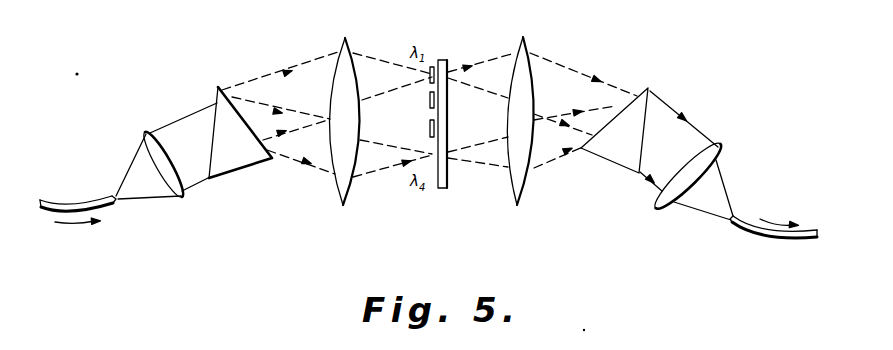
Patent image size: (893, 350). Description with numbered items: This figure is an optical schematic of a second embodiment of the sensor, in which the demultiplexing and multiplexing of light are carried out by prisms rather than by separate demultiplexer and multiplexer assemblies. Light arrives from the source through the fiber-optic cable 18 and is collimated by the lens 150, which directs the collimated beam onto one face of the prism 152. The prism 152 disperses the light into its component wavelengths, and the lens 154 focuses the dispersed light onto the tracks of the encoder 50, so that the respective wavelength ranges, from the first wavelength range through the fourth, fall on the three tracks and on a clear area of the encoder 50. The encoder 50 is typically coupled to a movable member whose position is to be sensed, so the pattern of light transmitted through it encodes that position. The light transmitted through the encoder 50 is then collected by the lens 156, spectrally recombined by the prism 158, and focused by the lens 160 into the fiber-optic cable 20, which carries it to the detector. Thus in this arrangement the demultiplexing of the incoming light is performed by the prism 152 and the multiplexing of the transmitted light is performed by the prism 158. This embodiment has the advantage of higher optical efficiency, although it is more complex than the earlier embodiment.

The fiber-optic cable 18 is at (42, 198).
The lens 150 is at (145, 131).
The prism 152 is at (222, 84).
The lens 154 is at (347, 42).
The encoder 50 is at (441, 62).
The lens 156 is at (528, 46).
The prism 158 is at (653, 93).
The lens 160 is at (717, 143).
The fiber-optic cable 20 is at (760, 242).